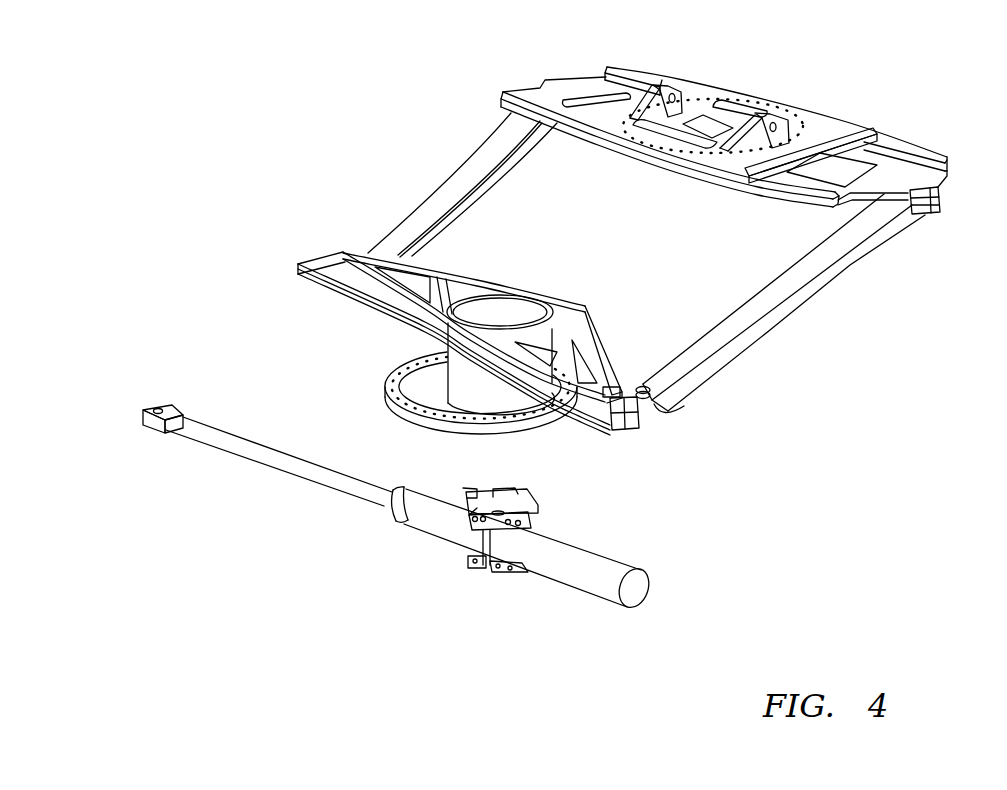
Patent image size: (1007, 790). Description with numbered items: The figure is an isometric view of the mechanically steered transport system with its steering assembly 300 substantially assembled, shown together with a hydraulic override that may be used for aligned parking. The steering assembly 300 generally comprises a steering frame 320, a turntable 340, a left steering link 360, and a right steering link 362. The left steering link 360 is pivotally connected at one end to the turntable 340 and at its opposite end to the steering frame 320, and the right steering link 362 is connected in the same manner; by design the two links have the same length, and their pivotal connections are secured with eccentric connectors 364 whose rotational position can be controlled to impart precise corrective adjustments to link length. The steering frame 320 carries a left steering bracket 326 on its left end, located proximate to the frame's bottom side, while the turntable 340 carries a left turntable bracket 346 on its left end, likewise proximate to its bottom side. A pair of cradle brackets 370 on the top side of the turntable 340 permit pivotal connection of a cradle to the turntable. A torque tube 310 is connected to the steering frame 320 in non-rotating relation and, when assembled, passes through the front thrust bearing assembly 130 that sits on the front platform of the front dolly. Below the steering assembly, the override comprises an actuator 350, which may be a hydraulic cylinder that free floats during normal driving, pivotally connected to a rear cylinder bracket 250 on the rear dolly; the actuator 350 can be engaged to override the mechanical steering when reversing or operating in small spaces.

The steering assembly 300 is at (910, 72).
The turntable 340 is at (916, 150).
The left turntable bracket 346 is at (935, 210).
The cradle brackets 370 is at (672, 88).
The left steering link 360 is at (793, 306).
The right steering link 362 is at (448, 176).
The eccentric connectors 364 is at (640, 387).
The left steering bracket 326 is at (640, 420).
The steering frame 320 is at (500, 282).
The torque tube 310 is at (447, 380).
The front thrust bearing assembly 130 is at (386, 392).
The actuator 350 is at (587, 593).
The rear cylinder bracket 250 is at (487, 570).